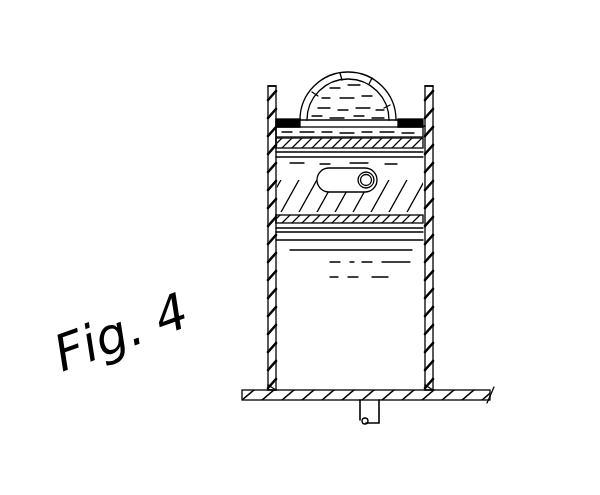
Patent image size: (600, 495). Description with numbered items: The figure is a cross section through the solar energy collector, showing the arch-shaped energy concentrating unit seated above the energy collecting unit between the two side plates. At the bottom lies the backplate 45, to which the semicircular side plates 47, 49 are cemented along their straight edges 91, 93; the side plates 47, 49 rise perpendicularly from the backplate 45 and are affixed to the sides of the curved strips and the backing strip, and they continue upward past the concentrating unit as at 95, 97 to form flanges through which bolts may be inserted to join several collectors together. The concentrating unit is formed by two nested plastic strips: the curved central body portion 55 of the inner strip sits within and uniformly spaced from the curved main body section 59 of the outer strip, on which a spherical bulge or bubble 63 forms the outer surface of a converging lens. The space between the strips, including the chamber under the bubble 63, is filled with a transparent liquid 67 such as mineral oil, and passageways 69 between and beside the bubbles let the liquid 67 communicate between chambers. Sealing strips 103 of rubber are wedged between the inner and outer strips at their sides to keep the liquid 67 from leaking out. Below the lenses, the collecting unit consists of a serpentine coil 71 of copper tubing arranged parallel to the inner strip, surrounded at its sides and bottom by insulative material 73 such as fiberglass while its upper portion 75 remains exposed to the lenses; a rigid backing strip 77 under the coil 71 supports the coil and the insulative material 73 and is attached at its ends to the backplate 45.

The backplate 45 is at (478, 390).
The side plate 47 is at (432, 282).
The side plate 49 is at (270, 247).
The central body portion of inner plastic strip 55 is at (428, 157).
The curved main body section of outer plastic strip 59 is at (288, 118).
The spherical bulge or bubble 63 is at (375, 78).
The transparent liquid 67 is at (362, 98).
The passageway 69 is at (332, 128).
The serpentine coil 71 is at (300, 174).
The insulative material 73 is at (406, 220).
The upper portion of tubing 75 is at (380, 174).
The rigid backing strip 77 is at (405, 242).
The straight edge of side plate 91 is at (432, 402).
The straight edge of side plate 93 is at (277, 402).
The upward extension of side plate 95 is at (422, 95).
The upward extension of side plate 97 is at (267, 98).
The sealing strip 103 is at (427, 130).